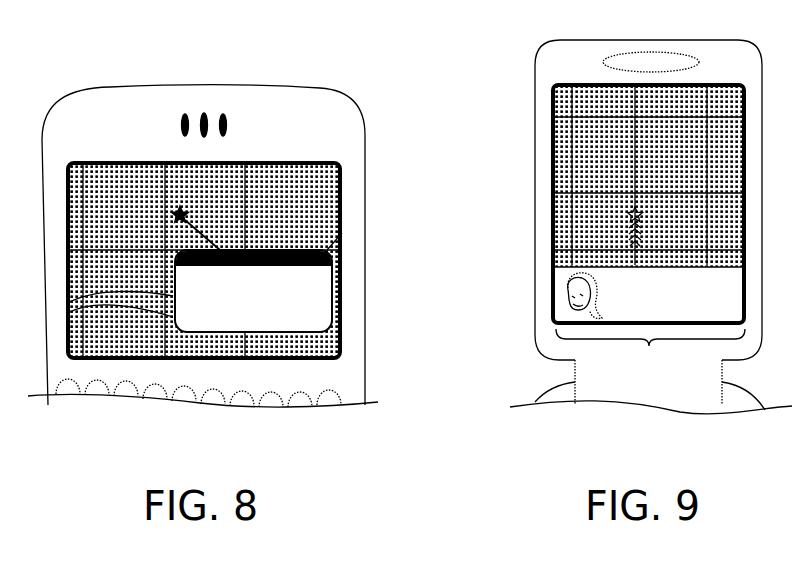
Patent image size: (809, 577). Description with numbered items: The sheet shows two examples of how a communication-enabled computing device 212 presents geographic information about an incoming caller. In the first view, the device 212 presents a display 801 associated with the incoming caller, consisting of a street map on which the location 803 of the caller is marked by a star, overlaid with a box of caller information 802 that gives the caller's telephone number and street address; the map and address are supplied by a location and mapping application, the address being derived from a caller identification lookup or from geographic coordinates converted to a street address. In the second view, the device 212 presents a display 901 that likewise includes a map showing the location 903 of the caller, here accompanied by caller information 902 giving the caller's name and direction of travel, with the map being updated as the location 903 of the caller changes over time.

In FIG. 8, the communication-enabled computing device 212 is at (283, 86).
In FIG. 9, the communication-enabled computing device 212 is at (536, 62).
In FIG. 8, the display 801 is at (343, 195).
In FIG. 8, the caller information 802 is at (343, 283).
In FIG. 8, the location 803 is at (178, 208).
In FIG. 9, the display 901 is at (553, 180).
In FIG. 9, the caller information 902 is at (650, 322).
In FIG. 9, the location 903 is at (641, 218).